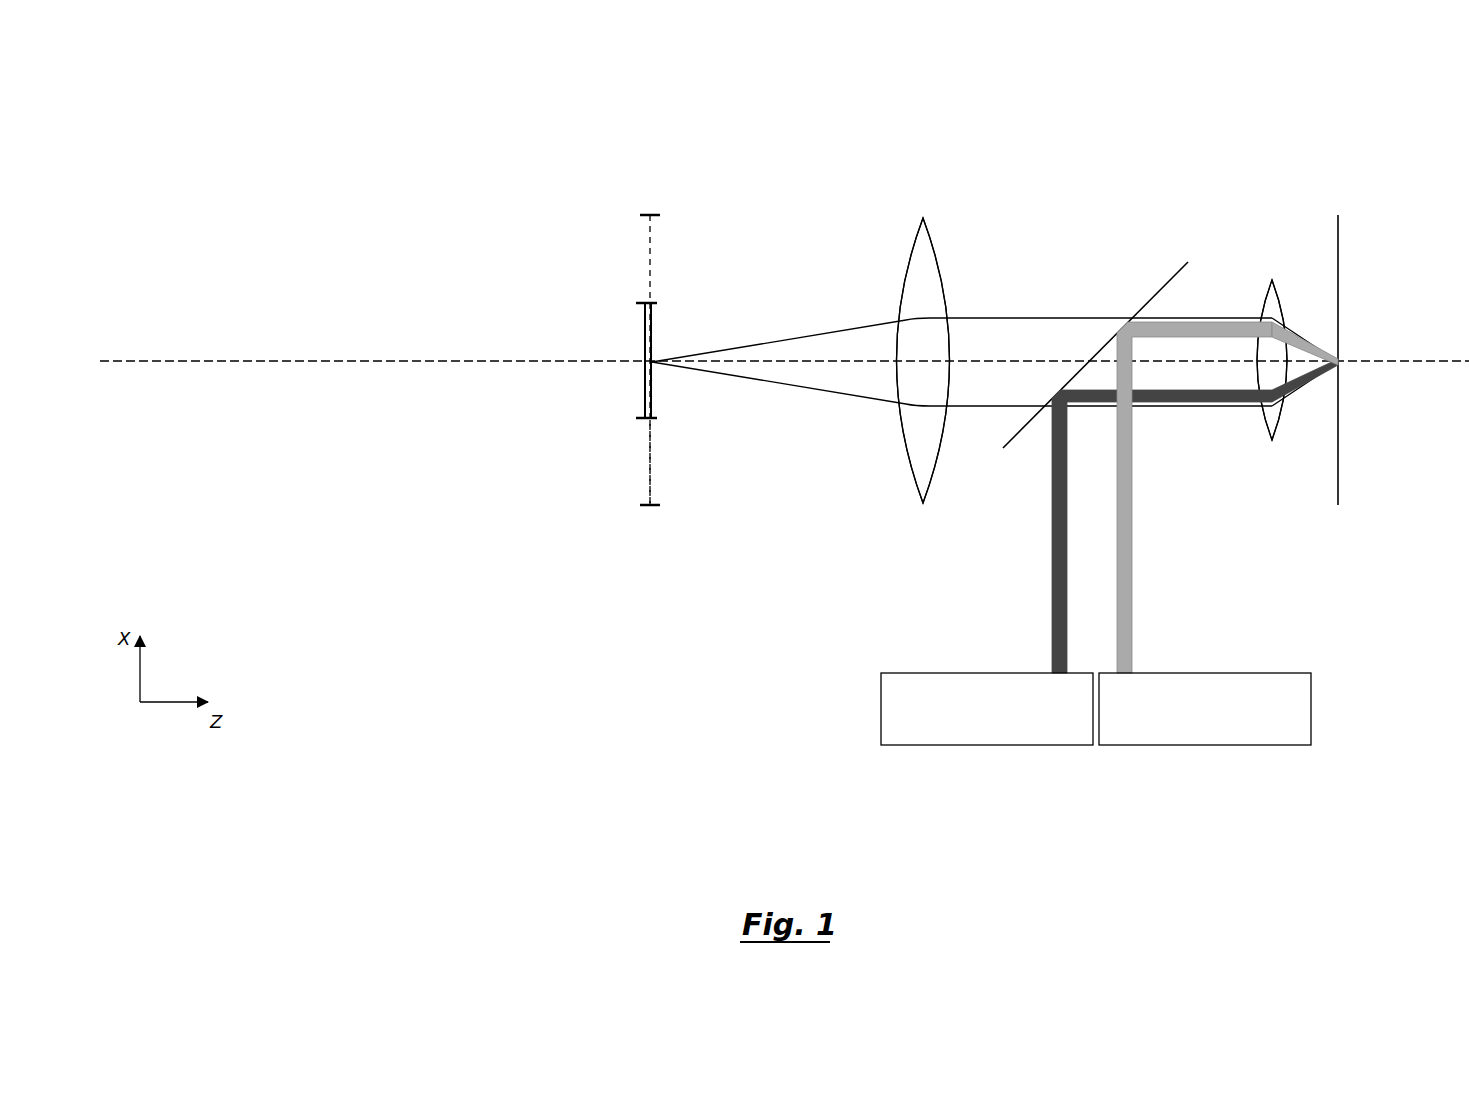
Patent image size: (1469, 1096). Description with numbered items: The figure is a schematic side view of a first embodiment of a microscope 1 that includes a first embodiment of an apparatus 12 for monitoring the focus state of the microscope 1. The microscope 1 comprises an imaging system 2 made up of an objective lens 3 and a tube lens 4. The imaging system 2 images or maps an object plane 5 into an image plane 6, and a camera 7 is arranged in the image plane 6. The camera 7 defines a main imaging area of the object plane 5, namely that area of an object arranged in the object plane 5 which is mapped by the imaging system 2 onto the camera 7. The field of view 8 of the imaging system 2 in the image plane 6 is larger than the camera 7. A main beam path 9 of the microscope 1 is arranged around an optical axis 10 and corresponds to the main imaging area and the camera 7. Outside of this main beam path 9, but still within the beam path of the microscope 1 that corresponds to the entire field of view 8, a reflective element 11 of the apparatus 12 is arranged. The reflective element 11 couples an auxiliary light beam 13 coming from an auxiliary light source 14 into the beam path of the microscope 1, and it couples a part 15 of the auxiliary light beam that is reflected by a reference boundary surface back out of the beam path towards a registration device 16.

The microscope 1 is at (1194, 143).
The imaging system 2 is at (930, 207).
The objective lens 3 is at (1278, 270).
The tube lens 4 is at (914, 224).
The object plane 5 is at (1340, 512).
The image plane 6 is at (650, 512).
The camera 7 is at (620, 390).
The field of view 8 is at (622, 453).
The main beam path 9 is at (1025, 311).
The optical axis 10 is at (223, 362).
The reflective element 11 is at (1176, 270).
The apparatus for monitoring the focus state 12 is at (1030, 762).
The auxiliary light beam 13 is at (1052, 573).
The auxiliary light source 14 is at (993, 712).
The part of the auxiliary light beam 15 is at (1128, 594).
The registration device 16 is at (1207, 720).